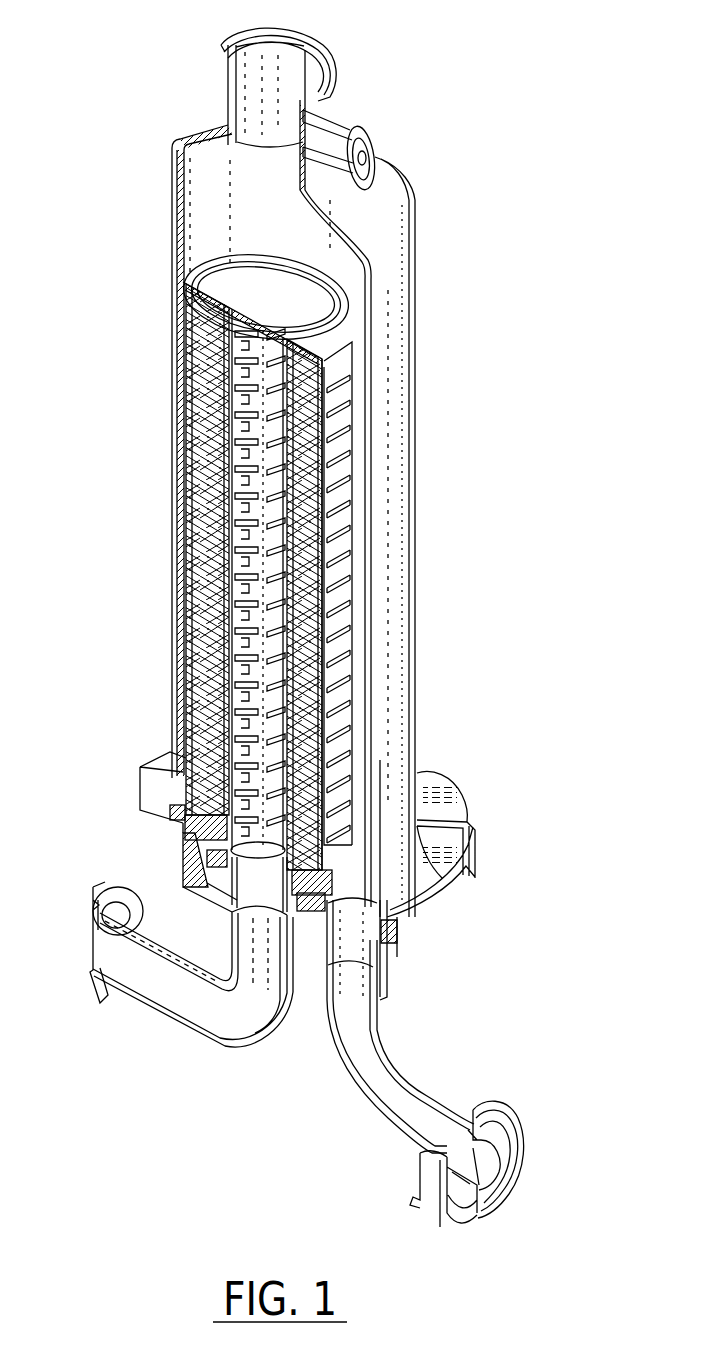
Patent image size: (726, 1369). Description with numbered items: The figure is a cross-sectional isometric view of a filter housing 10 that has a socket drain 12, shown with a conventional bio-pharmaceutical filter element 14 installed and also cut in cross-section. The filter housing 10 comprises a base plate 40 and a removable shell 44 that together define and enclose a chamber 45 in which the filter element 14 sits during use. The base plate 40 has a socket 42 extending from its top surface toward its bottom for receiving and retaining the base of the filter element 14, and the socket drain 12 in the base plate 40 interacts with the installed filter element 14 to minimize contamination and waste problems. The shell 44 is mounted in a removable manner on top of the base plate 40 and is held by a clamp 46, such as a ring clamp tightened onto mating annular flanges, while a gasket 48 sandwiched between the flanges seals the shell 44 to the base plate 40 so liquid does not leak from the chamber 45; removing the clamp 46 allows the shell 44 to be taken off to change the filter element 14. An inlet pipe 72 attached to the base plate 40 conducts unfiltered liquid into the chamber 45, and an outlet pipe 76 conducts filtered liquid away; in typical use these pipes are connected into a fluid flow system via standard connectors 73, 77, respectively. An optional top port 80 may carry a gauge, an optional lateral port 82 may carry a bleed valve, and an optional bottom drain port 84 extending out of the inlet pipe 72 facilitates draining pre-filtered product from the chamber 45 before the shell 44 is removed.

The filter housing 10 is at (163, 119).
The socket drain 12 is at (341, 918).
The filter element 14 is at (355, 545).
The base plate 40 is at (175, 853).
The socket 42 is at (260, 884).
The shell 44 is at (415, 268).
The chamber 45 is at (298, 237).
The clamp 46 is at (475, 853).
The gasket 48 is at (392, 927).
The inlet pipe 72 is at (407, 1066).
The standard connector 73 is at (523, 1125).
The outlet pipe 76 is at (173, 1023).
The standard connector 77 is at (93, 887).
The top port 80 is at (284, 50).
The lateral port 82 is at (372, 165).
The bottom drain port 84 is at (428, 1210).